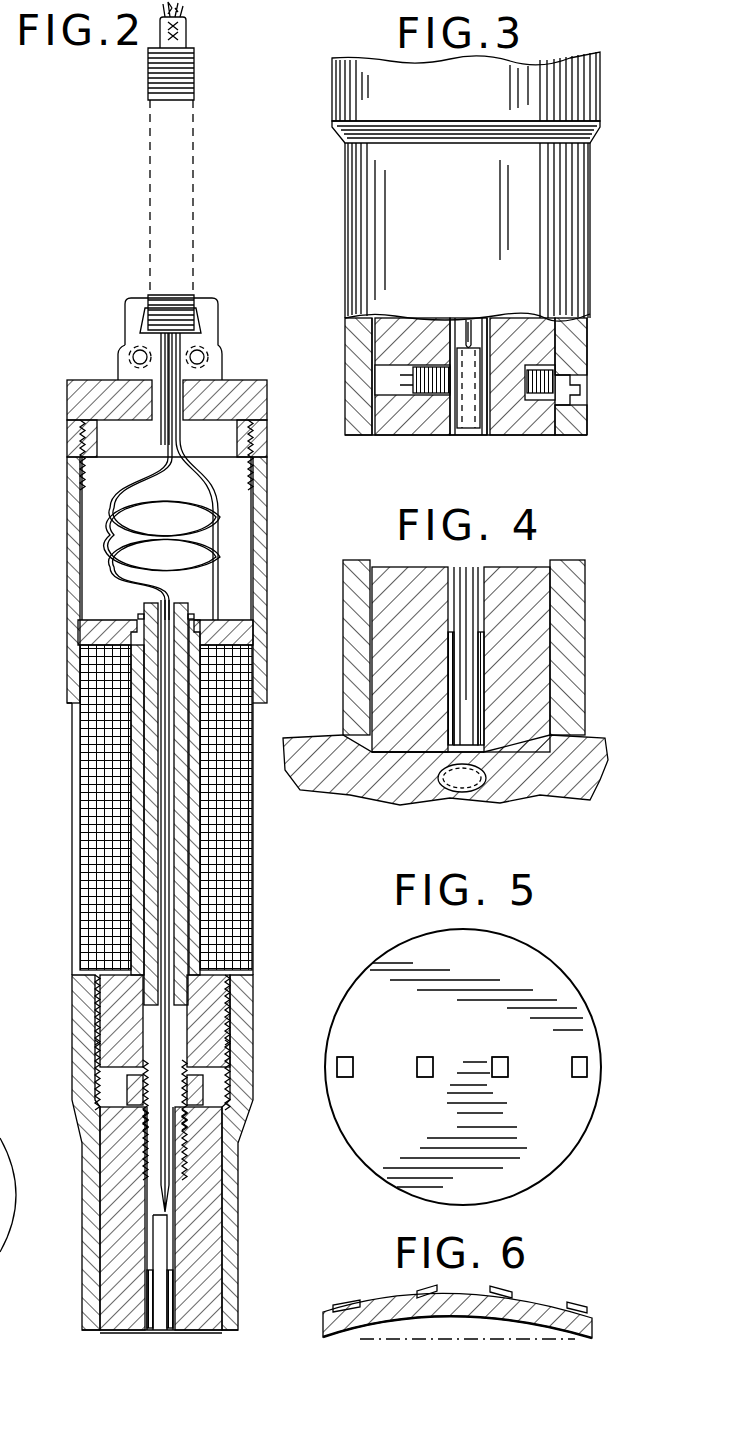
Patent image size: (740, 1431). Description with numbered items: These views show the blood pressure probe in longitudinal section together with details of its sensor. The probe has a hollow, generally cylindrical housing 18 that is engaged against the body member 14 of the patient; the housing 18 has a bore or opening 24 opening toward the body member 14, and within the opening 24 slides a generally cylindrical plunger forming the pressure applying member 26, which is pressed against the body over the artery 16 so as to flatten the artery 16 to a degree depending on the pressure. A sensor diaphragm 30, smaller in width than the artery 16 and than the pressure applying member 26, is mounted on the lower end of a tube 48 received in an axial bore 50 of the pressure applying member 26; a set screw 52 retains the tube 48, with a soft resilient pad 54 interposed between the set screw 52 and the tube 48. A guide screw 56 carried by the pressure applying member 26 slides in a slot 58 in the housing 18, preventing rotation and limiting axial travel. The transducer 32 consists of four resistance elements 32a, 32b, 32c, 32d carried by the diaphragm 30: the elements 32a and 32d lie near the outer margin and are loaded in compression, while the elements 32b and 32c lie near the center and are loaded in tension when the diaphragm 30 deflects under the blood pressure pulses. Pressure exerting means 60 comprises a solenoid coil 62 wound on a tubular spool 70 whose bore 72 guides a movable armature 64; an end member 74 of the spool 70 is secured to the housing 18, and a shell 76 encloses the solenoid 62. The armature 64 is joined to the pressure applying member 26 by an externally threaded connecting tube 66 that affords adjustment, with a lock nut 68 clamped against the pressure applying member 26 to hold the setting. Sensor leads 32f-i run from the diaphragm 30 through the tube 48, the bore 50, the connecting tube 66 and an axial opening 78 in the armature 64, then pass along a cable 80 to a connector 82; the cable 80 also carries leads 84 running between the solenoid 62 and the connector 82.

In FIG. 4, the body member 14 is at (300, 738).
In FIG. 4, the artery 16 is at (452, 792).
In FIG. 2, the housing 18 is at (88, 1283).
In FIG. 3, the housing 18 is at (358, 358).
In FIG. 4, the housing 18 is at (352, 648).
In FIG. 2, the bore or opening 24 is at (103, 1318).
In FIG. 3, the bore or opening 24 is at (372, 428).
In FIG. 4, the bore or opening 24 is at (545, 636).
In FIG. 2, the pressure applying member 26 is at (200, 1325).
In FIG. 3, the pressure applying member 26 is at (420, 435).
In FIG. 4, the pressure applying member 26 is at (525, 740).
In FIG. 2, the sensor diaphragm 30 is at (150, 1331).
In FIG. 3, the sensor diaphragm 30 is at (468, 435).
In FIG. 4, the sensor diaphragm 30 is at (388, 795).
In FIG. 5, the sensor diaphragm 30 is at (365, 973).
In FIG. 6, the sensor diaphragm 30 is at (360, 1332).
In FIG. 5, the transducer 32 is at (345, 1085).
In FIG. 5, the resistance element 32a is at (345, 1056).
In FIG. 6, the resistance element 32a is at (340, 1308).
In FIG. 5, the resistance element 32b is at (430, 1078).
In FIG. 6, the resistance element 32b is at (425, 1292).
In FIG. 5, the resistance element 32c is at (499, 1056).
In FIG. 6, the resistance element 32c is at (508, 1294).
In FIG. 5, the resistance element 32d is at (579, 1078).
In FIG. 6, the resistance element 32d is at (580, 1306).
In FIG. 2, the sensor leads 32f-i is at (118, 482).
In FIG. 3, the sensor leads 32f-i is at (472, 335).
In FIG. 4, the sensor leads 32f-i is at (470, 578).
In FIG. 2, the tube 48 is at (178, 1283).
In FIG. 3, the tube 48 is at (490, 420).
In FIG. 4, the tube 48 is at (450, 636).
In FIG. 2, the axial bore 50 is at (147, 1240).
In FIG. 3, the axial bore 50 is at (460, 345).
In FIG. 4, the axial bore 50 is at (462, 568).
In FIG. 3, the set screw 52 is at (410, 383).
In FIG. 3, the resilient pad 54 is at (430, 370).
In FIG. 3, the guide screw 56 is at (578, 368).
In FIG. 3, the slot 58 is at (575, 415).
In FIG. 2, the pressure exerting means 60 is at (68, 887).
In FIG. 2, the solenoid coil 62 is at (108, 835).
In FIG. 2, the armature 64 is at (148, 748).
In FIG. 2, the connecting tube 66 is at (148, 997).
In FIG. 2, the lock nut 68 is at (130, 1100).
In FIG. 2, the tubular spool 70 is at (140, 725).
In FIG. 2, the bore 72 is at (150, 650).
In FIG. 2, the end member 74 is at (113, 1037).
In FIG. 2, the shell 76 is at (75, 930).
In FIG. 2, the axial opening 78 is at (155, 702).
In FIG. 2, the cable 80 is at (188, 38).
In FIG. 2, the connector 82 is at (10, 195).
In FIG. 2, the leads 84 is at (220, 582).